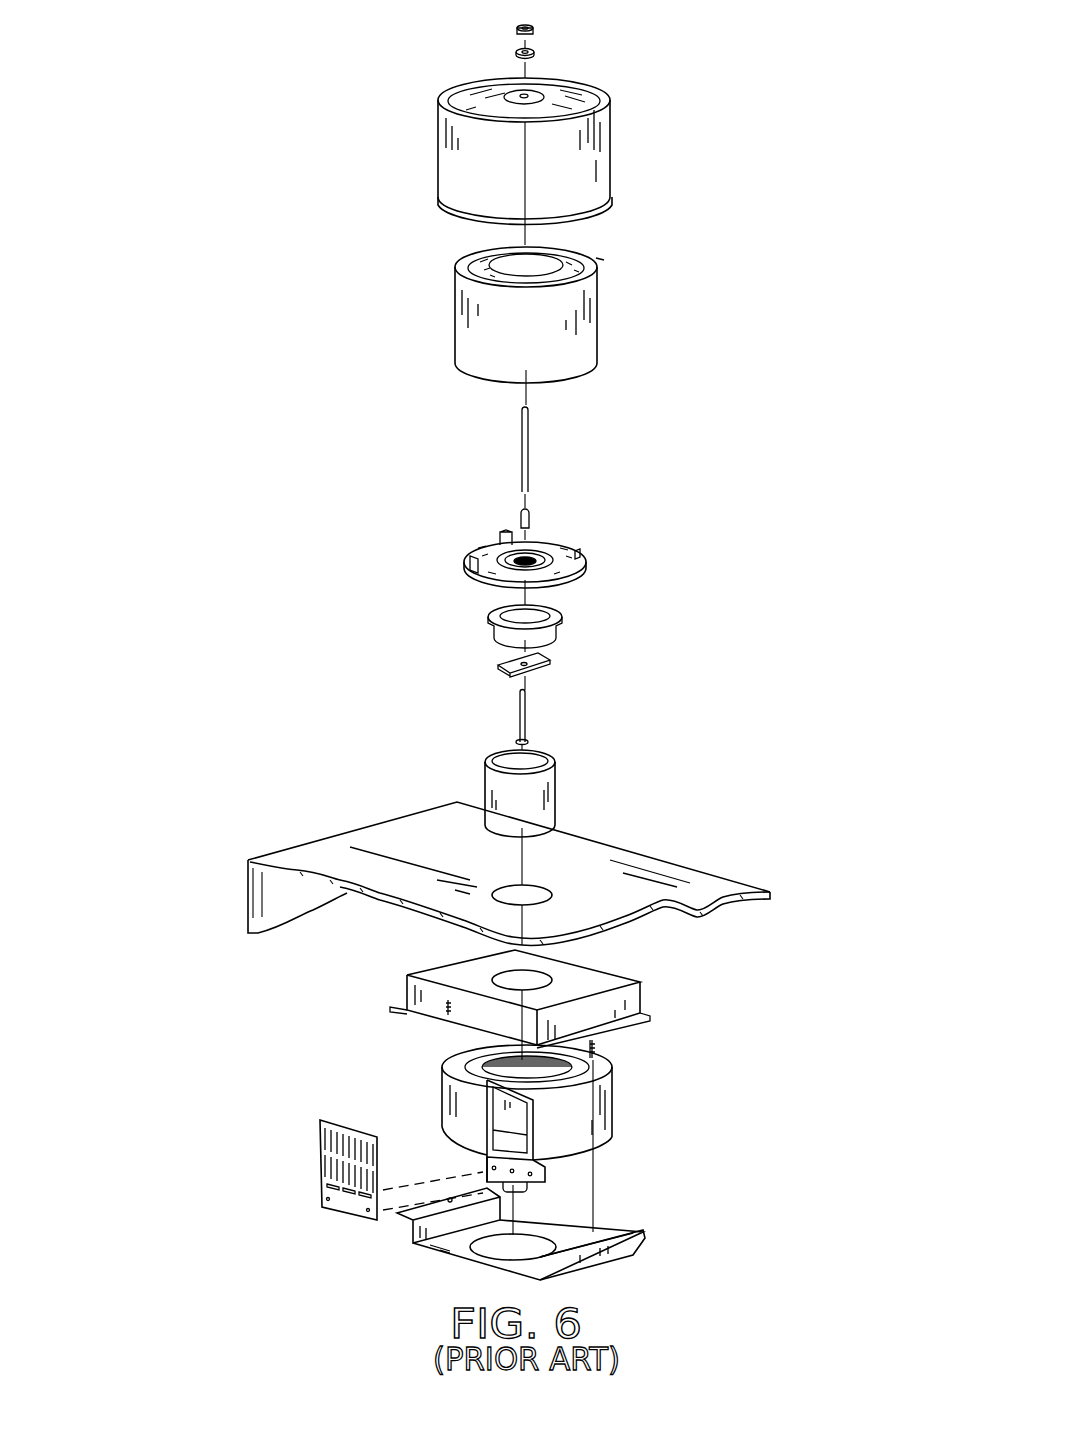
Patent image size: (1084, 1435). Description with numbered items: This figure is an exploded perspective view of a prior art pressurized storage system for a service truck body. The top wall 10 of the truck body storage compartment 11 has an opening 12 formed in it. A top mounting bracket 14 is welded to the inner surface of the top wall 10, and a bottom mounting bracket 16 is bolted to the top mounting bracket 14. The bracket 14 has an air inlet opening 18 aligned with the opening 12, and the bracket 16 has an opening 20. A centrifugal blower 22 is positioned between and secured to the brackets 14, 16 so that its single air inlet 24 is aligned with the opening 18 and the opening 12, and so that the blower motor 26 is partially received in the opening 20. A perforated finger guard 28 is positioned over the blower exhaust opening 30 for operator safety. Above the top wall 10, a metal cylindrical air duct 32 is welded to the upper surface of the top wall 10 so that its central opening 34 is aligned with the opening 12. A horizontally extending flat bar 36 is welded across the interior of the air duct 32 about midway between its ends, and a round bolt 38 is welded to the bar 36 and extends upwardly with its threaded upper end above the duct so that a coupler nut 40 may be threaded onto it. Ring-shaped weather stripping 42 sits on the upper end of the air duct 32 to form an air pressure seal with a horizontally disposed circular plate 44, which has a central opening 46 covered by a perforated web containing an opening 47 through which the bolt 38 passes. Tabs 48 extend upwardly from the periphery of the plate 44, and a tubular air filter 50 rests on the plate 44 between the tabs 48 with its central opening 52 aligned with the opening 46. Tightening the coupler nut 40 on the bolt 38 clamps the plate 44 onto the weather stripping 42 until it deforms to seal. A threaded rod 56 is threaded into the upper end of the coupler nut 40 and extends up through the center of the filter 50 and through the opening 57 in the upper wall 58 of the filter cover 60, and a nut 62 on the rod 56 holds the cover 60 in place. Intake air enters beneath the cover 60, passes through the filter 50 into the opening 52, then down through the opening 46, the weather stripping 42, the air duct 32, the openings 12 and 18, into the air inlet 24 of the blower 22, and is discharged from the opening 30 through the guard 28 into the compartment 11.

The top wall 10 is at (490, 869).
The truck body storage compartment 11 is at (330, 942).
The opening 12 is at (547, 890).
The top mounting bracket 14 is at (581, 984).
The bottom mounting bracket 16 is at (544, 1233).
The air inlet opening 18 is at (540, 972).
The opening 20 is at (490, 1260).
The centrifugal blower 22 is at (536, 1116).
The air inlet 24 is at (542, 1068).
The blower motor 26 is at (553, 1160).
The perforated finger guard 28 is at (318, 1157).
The blower exhaust opening 30 is at (507, 1110).
The air duct 32 is at (585, 781).
The central opening 34 is at (548, 753).
The flat bar 36 is at (552, 660).
The bolt 38 is at (528, 720).
The coupler nut 40 is at (532, 520).
The weather stripping 42 is at (563, 620).
The circular plate 44 is at (550, 558).
The central opening 46 is at (497, 543).
The opening 47 is at (570, 548).
The tabs 48 is at (470, 565).
The air filter 50 is at (593, 315).
The central opening 52 is at (575, 255).
The threaded rod 56 is at (530, 460).
The opening 57 is at (530, 95).
The upper wall 58 is at (585, 97).
The filter cover 60 is at (586, 139).
The nut 62 is at (534, 30).